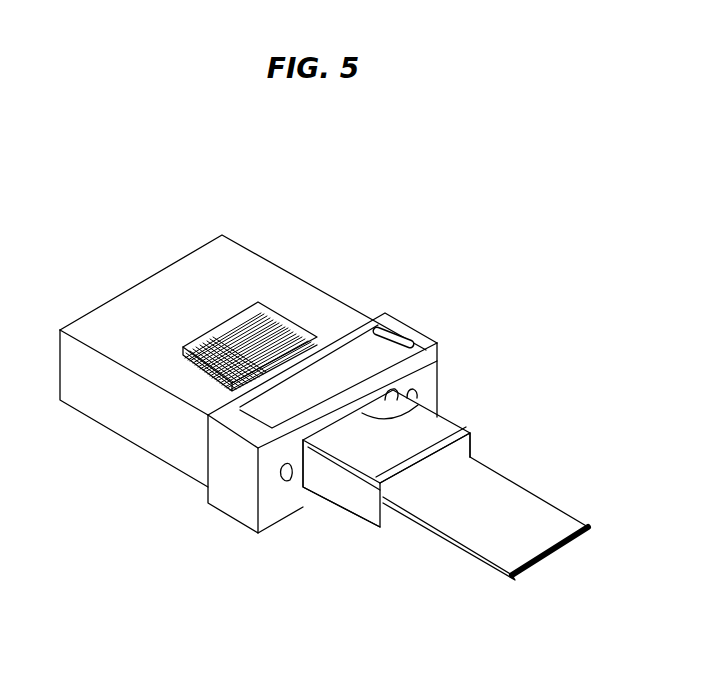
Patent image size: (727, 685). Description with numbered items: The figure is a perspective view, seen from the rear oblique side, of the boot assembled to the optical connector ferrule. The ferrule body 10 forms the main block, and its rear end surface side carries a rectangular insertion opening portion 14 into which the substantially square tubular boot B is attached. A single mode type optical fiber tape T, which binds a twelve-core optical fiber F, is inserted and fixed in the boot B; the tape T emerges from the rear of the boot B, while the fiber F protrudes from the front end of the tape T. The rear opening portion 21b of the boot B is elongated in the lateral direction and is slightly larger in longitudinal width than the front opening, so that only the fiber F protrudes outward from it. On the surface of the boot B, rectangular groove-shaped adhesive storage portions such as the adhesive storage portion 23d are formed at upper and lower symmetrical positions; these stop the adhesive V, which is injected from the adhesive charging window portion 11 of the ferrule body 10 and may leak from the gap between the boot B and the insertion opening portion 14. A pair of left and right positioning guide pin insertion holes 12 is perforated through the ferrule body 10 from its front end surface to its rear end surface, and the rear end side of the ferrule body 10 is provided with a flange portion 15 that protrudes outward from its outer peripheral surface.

The ferrule body 10 is at (348, 290).
The adhesive charging window portion 11 is at (208, 296).
The adhesive V is at (239, 335).
The positioning guide pin insertion holes 12 is at (284, 490).
The insertion opening portion 14 is at (415, 402).
The flange portion 15 is at (422, 341).
The boot B is at (412, 491).
The adhesive storage portion 23d is at (352, 430).
The rear opening portion 21b is at (430, 472).
The single mode type optical fiber tape T is at (504, 525).
The twelve-core optical fiber F is at (535, 568).